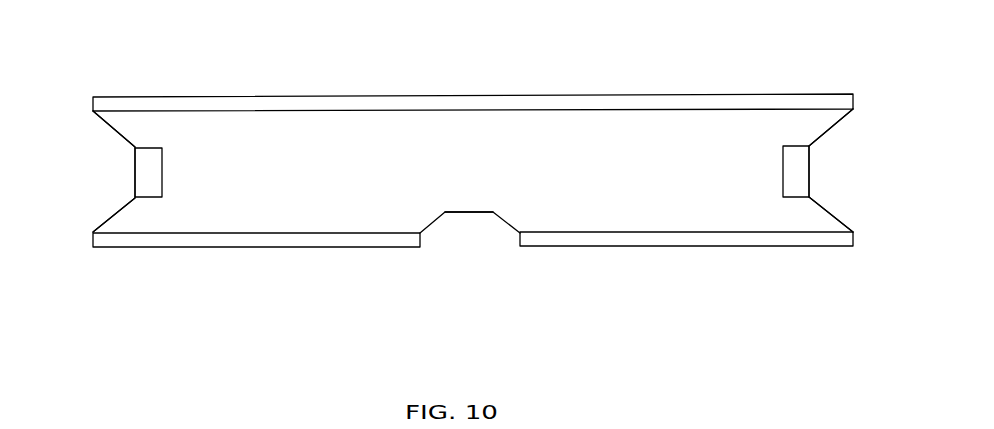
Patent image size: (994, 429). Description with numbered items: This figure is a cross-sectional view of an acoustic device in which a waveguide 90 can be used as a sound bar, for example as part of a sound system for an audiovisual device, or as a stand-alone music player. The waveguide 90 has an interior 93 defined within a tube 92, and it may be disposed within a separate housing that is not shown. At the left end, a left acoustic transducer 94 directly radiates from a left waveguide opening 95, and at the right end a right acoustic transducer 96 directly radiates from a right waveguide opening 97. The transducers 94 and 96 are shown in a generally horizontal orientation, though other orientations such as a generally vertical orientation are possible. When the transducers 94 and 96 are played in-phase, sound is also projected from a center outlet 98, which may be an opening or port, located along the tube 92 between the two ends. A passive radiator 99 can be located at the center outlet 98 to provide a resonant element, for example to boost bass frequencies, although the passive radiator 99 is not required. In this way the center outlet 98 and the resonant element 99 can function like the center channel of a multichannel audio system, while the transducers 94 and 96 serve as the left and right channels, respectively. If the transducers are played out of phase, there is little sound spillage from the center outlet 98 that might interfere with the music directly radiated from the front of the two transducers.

The waveguide 90 is at (389, 80).
The tube 92 is at (230, 97).
The interior 93 is at (328, 214).
The left acoustic transducer 94 is at (162, 177).
The left waveguide opening 95 is at (121, 171).
The right acoustic transducer 96 is at (783, 175).
The right waveguide opening 97 is at (827, 168).
The center outlet 98 is at (473, 233).
The passive radiator 99 is at (506, 222).